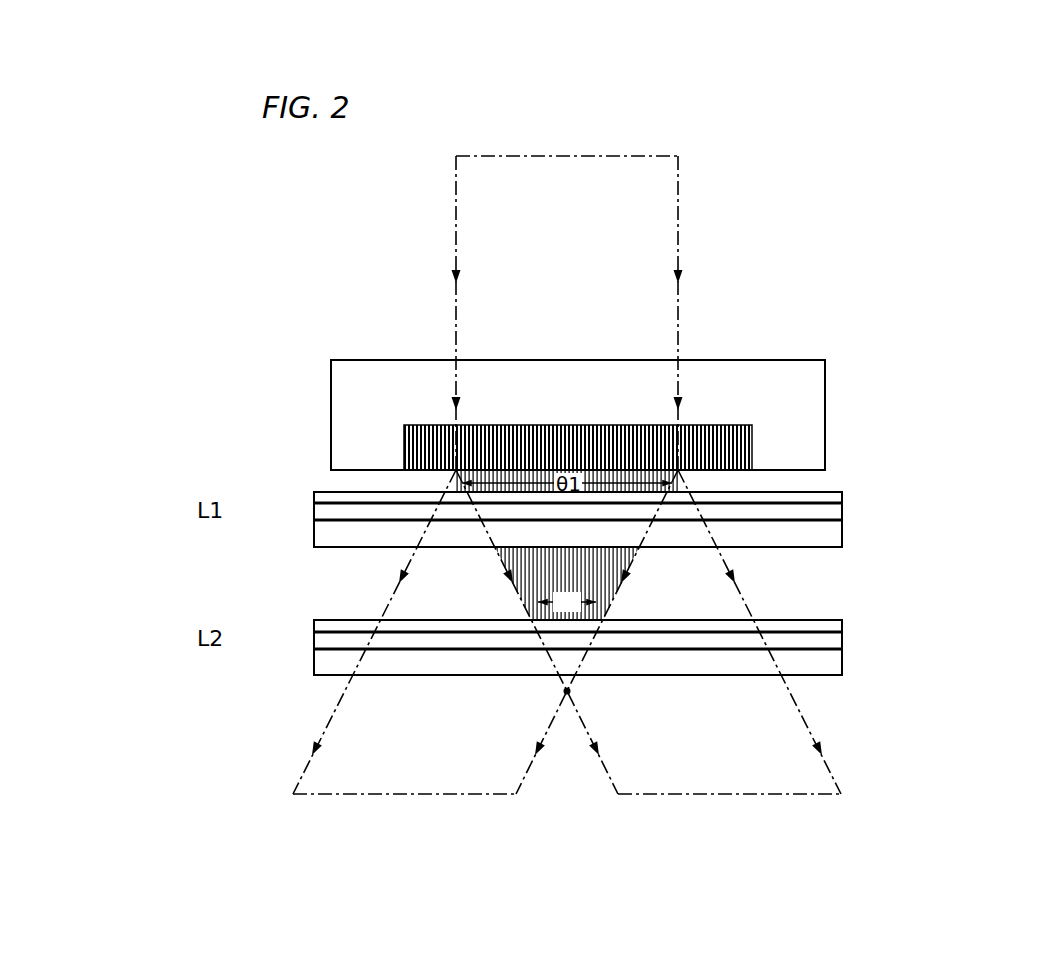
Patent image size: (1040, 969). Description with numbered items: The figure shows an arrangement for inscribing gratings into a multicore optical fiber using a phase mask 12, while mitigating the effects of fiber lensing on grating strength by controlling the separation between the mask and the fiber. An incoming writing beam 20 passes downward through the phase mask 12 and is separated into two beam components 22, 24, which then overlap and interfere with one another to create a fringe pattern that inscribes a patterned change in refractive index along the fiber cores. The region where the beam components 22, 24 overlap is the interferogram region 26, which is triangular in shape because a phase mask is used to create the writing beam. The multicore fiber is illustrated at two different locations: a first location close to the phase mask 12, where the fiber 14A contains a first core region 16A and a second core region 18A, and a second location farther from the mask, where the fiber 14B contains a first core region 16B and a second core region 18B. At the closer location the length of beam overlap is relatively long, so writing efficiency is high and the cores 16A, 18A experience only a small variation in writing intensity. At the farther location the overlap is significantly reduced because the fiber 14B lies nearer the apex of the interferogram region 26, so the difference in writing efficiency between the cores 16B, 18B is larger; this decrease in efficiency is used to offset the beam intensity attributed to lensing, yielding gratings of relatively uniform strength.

The phase mask 12 is at (331, 373).
The multicore fiber at first location L1 14A is at (314, 492).
The multicore fiber at second location L2 14B is at (314, 620).
The first core region 16A is at (842, 503).
The second core region 18A is at (842, 520).
The first core region 16B is at (842, 632).
The second core region 18B is at (842, 649).
The writing beam 20 is at (697, 152).
The first beam component 22 is at (425, 776).
The second beam component 24 is at (709, 777).
The interferogram region 26 is at (600, 559).